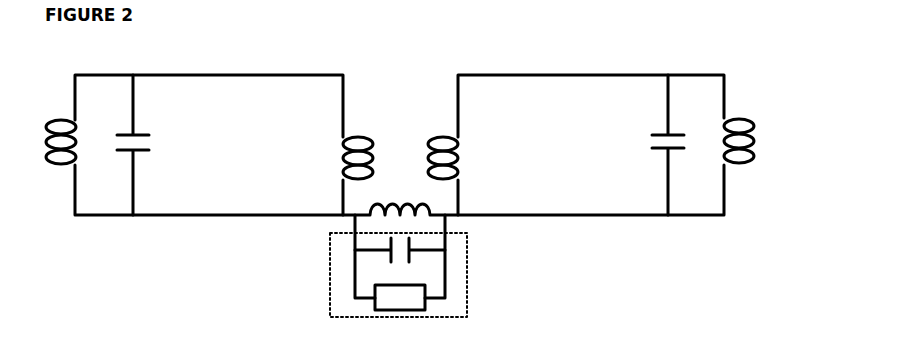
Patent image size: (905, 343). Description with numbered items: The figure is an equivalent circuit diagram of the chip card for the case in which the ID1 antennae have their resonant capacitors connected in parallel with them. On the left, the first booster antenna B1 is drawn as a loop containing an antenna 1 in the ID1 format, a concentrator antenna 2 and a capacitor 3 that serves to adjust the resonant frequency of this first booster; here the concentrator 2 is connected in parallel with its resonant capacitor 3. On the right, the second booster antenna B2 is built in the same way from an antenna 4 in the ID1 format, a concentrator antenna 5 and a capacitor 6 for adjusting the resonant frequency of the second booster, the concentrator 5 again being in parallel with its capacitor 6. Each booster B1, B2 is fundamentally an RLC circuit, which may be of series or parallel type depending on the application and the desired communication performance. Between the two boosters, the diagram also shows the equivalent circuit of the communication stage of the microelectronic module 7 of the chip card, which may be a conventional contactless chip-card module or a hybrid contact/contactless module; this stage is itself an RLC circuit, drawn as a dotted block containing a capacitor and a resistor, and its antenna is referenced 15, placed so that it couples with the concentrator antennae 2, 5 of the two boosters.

The antenna 1 is at (55, 120).
The concentrator antenna 2 is at (358, 136).
The capacitor 3 is at (140, 134).
The antenna 4 is at (742, 117).
The concentrator antenna 5 is at (440, 136).
The capacitor 6 is at (660, 133).
The microelectronic module 7 is at (484, 291).
The antenna 15 is at (372, 200).
The first booster antenna B1 is at (162, 257).
The second booster antenna B2 is at (622, 250).